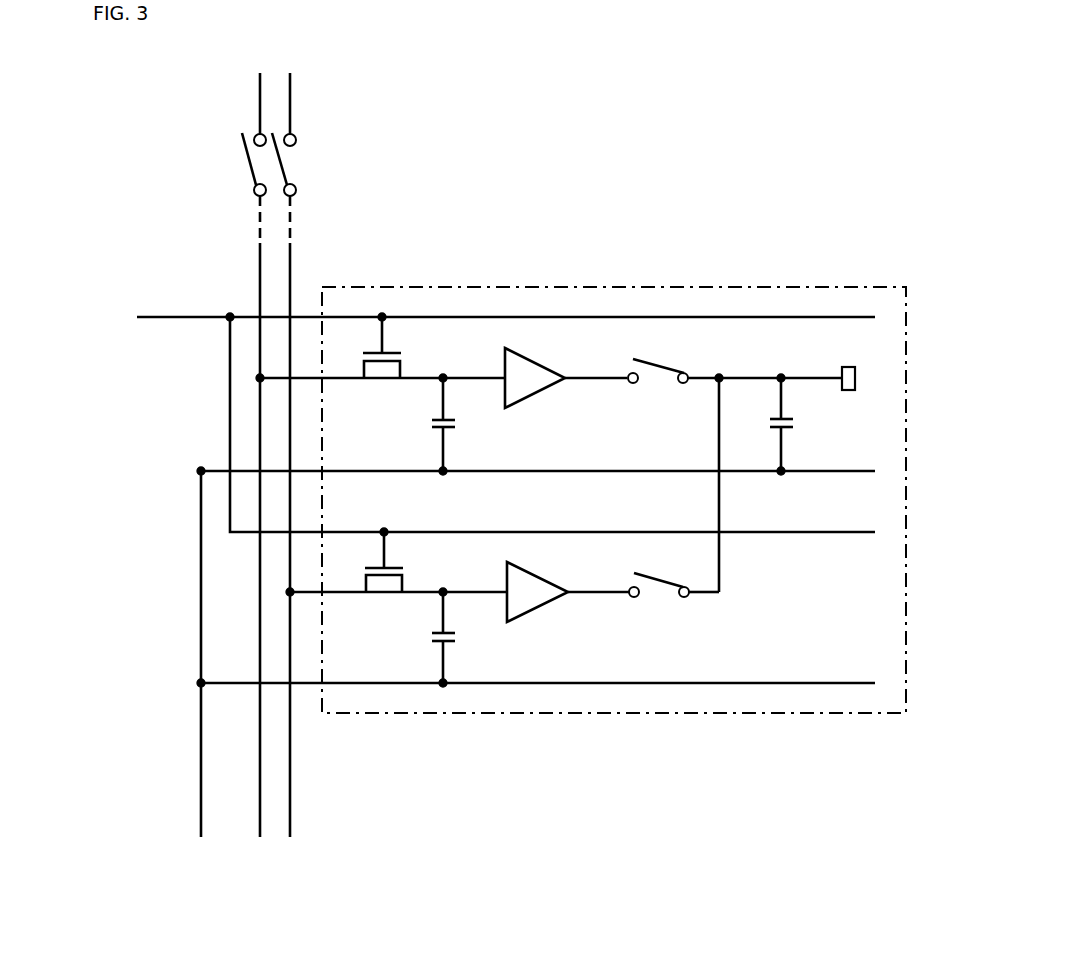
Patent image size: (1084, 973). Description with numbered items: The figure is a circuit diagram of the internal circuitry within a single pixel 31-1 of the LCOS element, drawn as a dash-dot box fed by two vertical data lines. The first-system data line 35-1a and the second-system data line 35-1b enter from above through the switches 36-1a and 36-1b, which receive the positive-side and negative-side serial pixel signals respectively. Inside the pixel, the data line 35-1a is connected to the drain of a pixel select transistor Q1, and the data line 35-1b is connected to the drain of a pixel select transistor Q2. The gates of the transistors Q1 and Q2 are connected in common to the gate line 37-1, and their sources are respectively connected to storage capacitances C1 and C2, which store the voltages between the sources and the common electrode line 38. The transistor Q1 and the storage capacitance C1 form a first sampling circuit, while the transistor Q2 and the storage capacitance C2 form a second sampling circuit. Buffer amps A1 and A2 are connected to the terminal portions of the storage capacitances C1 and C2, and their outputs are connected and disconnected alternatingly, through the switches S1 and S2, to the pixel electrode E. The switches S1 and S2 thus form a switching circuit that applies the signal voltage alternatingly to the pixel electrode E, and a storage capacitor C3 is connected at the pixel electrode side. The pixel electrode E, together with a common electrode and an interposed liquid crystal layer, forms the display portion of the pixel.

The pixel 31-1 is at (475, 287).
The gate line 37-1 is at (193, 317).
The common electrode line 38 is at (201, 777).
The data line 35-1a is at (260, 807).
The data line 35-1b is at (290, 807).
The switch 36-1a is at (240, 163).
The switch 36-1b is at (297, 163).
The pixel select transistor Q1 is at (387, 365).
The pixel select transistor Q2 is at (387, 579).
The storage capacitance C1 is at (476, 426).
The storage capacitance C2 is at (476, 639).
The storage capacitor C3 is at (814, 426).
The buffer amp A1 is at (552, 367).
The buffer amp A2 is at (554, 581).
The switch S1 is at (659, 387).
The switch S2 is at (660, 601).
The pixel electrode E is at (858, 380).